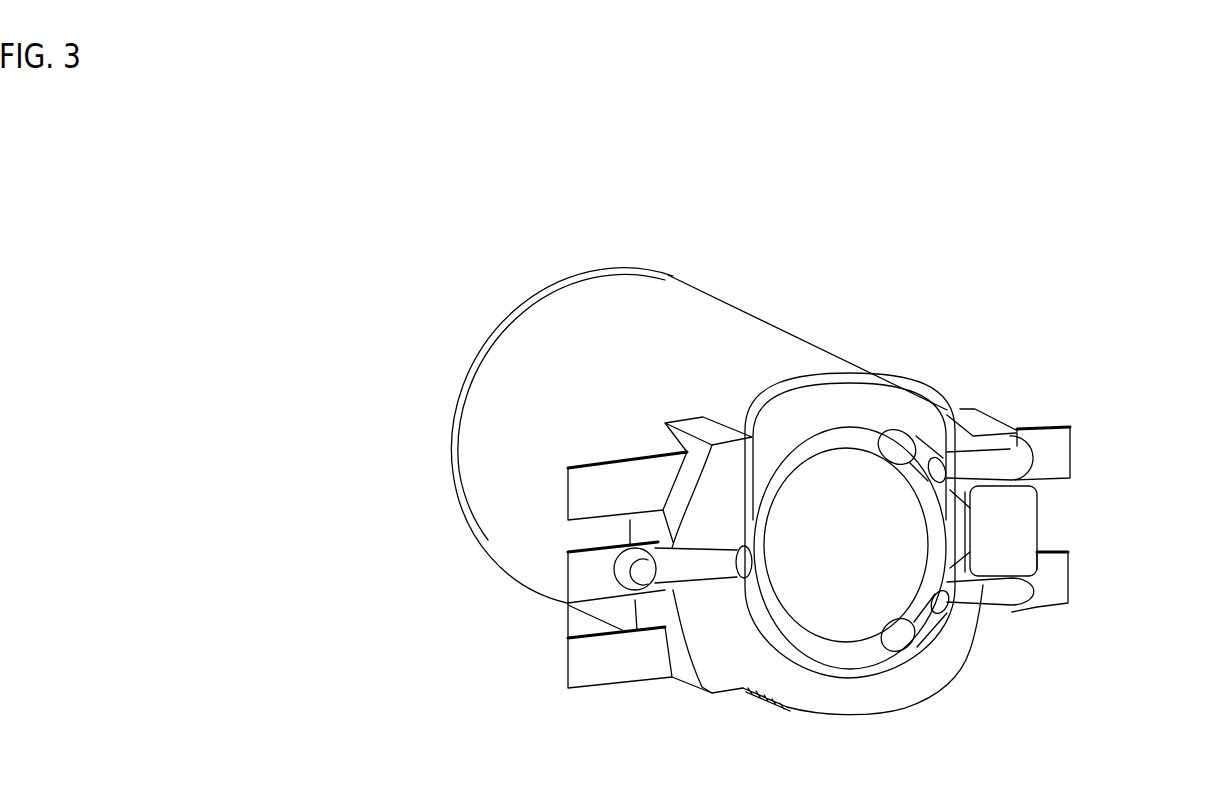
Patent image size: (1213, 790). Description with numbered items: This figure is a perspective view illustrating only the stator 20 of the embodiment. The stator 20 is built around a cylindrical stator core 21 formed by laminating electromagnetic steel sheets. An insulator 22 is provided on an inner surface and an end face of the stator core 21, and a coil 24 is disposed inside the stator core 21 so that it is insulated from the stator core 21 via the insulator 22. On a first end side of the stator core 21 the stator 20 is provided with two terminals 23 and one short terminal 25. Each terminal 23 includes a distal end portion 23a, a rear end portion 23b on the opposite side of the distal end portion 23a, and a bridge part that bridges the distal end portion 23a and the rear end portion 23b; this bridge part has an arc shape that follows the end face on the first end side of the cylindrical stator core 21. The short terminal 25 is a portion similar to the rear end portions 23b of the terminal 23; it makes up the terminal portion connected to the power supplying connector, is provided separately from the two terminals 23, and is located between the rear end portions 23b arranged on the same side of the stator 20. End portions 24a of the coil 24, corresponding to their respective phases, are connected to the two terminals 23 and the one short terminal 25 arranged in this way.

The stator 20 is at (736, 88).
The stator core 21 is at (762, 333).
The insulator 22 is at (882, 412).
The terminal 23 is at (876, 562).
The distal end portion 23a is at (1068, 423).
The rear end portion 23b is at (684, 445).
The coil 24 is at (834, 650).
The end portion of the coil 24a is at (702, 562).
The short terminal 25 is at (568, 605).